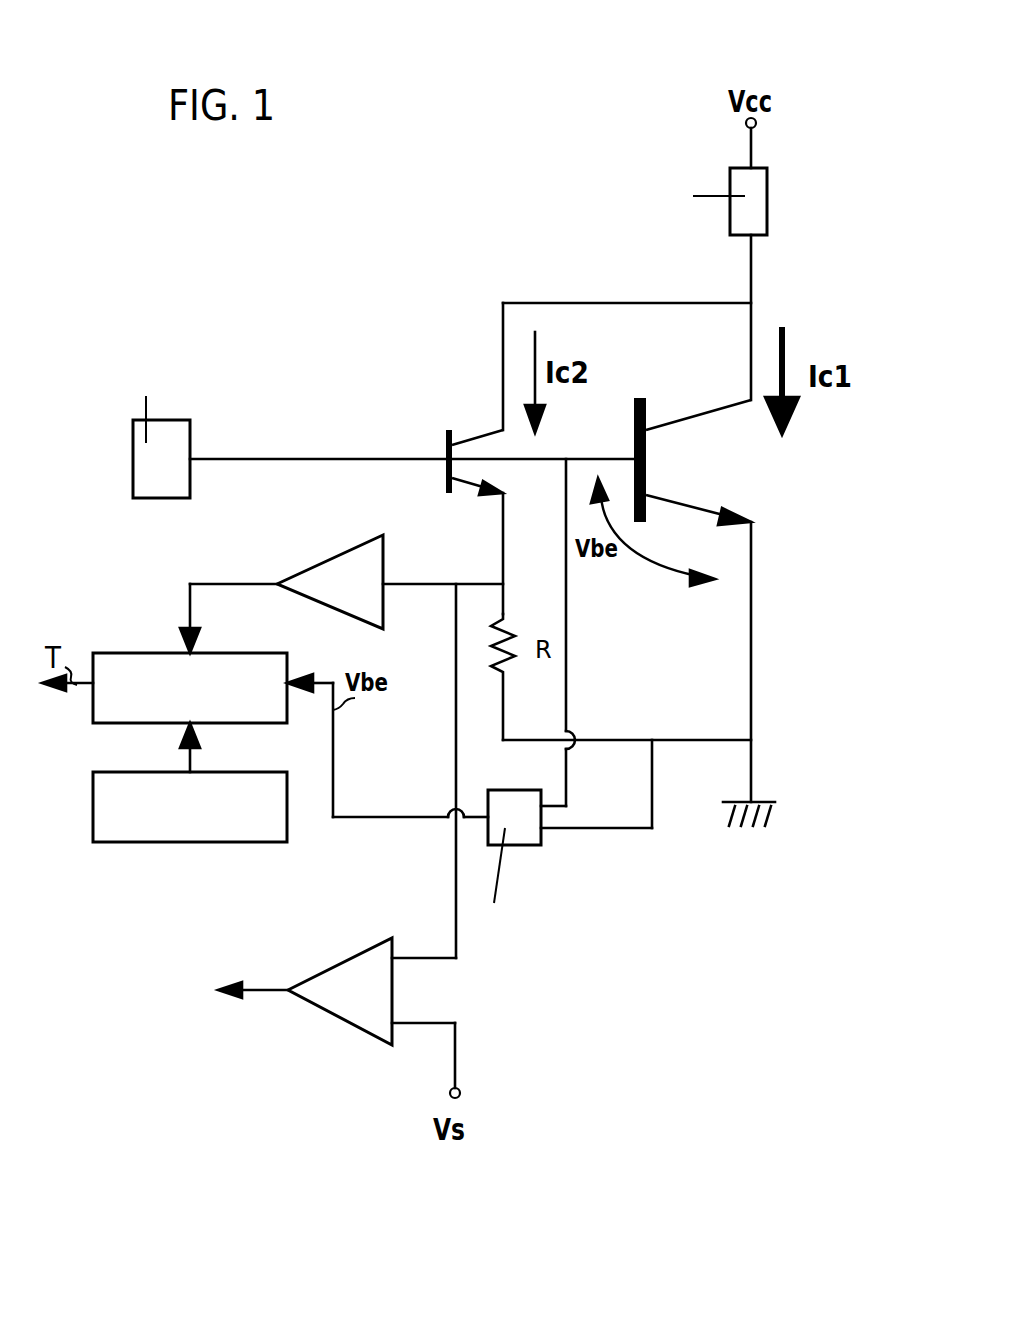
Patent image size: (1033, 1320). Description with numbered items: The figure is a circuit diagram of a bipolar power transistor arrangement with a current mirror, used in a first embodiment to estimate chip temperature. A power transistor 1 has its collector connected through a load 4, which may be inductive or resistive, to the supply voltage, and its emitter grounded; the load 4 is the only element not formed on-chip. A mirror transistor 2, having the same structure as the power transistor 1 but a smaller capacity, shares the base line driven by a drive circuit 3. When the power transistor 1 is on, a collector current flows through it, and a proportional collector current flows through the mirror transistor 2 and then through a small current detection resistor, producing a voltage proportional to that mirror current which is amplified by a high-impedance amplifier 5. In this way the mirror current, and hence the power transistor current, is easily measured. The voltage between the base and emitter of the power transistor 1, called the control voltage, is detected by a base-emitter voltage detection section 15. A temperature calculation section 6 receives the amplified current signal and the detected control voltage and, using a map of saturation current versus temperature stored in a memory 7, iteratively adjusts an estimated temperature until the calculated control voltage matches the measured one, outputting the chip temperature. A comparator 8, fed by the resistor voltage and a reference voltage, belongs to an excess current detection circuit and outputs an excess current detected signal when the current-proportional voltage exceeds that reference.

The power transistor 1 is at (648, 393).
The mirror transistor 2 is at (447, 428).
The drive circuit 3 is at (190, 438).
The load 4 is at (767, 222).
The amplifier 5 is at (317, 570).
The temperature calculation section 6 is at (132, 653).
The memory 7 is at (151, 844).
The comparator 8 is at (320, 977).
The Vbe detection section 15 is at (510, 852).